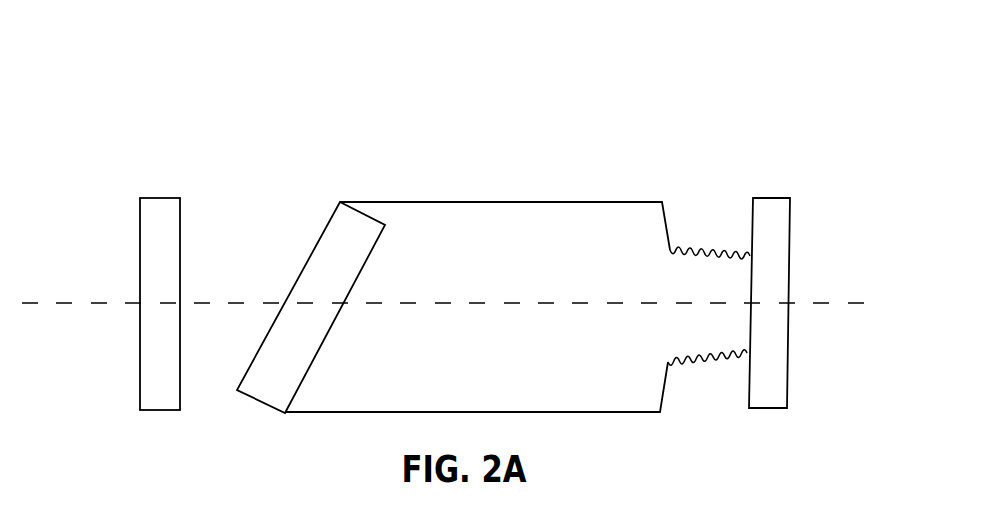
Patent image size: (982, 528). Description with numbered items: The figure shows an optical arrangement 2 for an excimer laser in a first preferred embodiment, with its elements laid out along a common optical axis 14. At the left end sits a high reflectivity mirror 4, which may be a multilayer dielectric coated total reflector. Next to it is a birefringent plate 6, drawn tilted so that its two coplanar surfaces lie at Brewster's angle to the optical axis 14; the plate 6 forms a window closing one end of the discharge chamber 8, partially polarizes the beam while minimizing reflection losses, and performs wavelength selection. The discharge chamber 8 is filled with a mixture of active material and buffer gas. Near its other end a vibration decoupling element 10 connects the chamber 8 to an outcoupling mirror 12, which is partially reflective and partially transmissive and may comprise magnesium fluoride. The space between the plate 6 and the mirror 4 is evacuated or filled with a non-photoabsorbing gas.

The optical arrangement 2 is at (182, 70).
The high reflectivity mirror 4 is at (157, 197).
The birefringent plate 6 is at (328, 240).
The discharge chamber 8 is at (493, 202).
The vibration decoupling element 10 is at (698, 247).
The outcoupling mirror 12 is at (775, 197).
The optical axis 14 is at (28, 302).